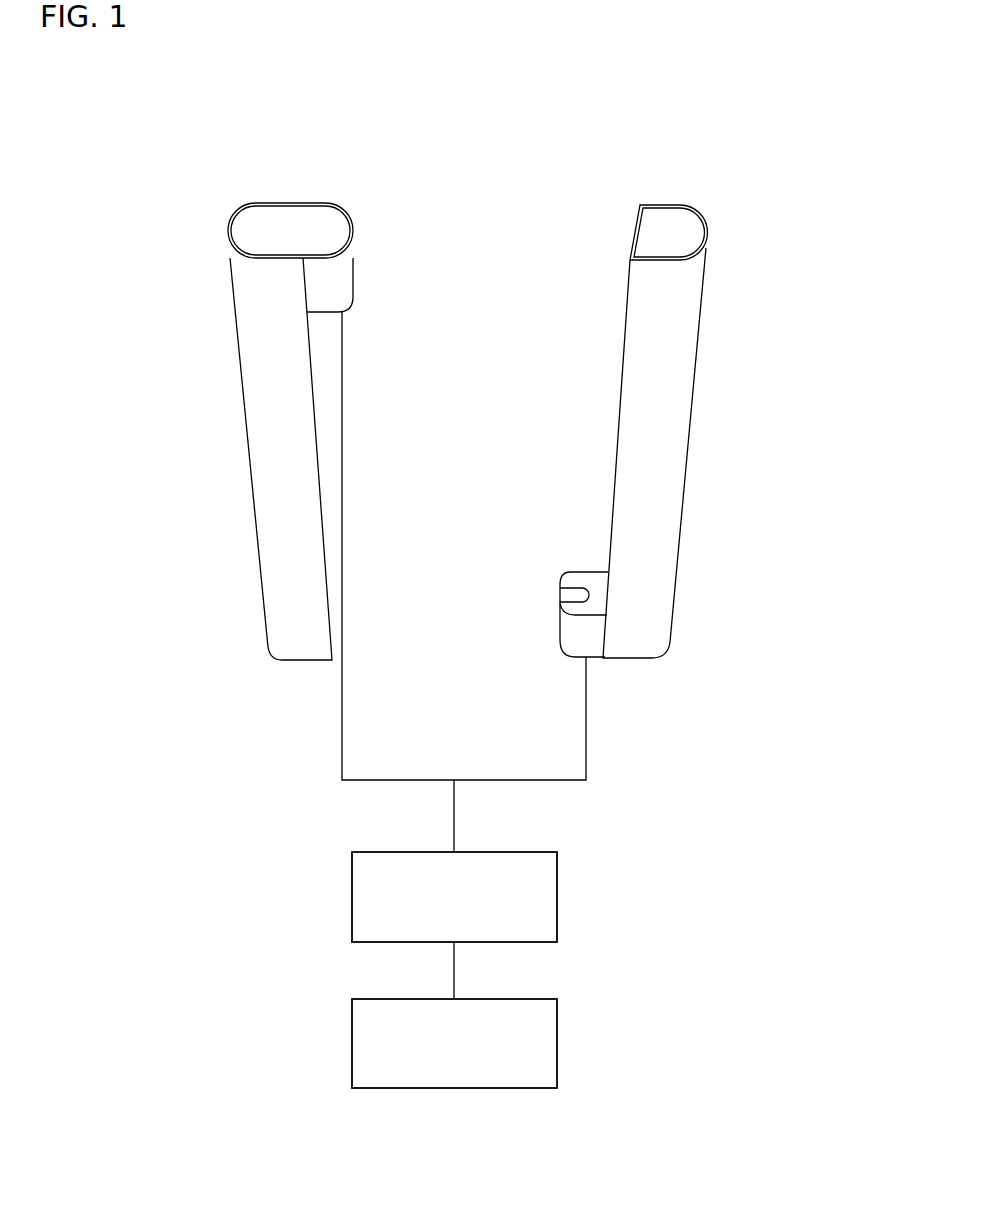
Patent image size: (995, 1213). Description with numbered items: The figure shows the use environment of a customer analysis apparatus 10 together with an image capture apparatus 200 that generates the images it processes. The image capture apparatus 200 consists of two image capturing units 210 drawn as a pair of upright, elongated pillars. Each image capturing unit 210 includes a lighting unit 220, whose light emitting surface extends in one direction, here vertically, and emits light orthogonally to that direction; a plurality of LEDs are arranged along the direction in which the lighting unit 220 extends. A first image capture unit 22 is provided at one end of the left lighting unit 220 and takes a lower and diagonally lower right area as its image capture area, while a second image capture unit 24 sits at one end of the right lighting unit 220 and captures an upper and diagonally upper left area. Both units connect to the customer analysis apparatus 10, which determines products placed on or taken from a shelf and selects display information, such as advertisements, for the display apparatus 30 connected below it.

The image capture apparatus 200 is at (662, 86).
The image capturing unit 210 is at (298, 195).
The lighting unit 220 is at (250, 407).
The first image capture unit 22 is at (345, 275).
The second image capture unit 24 is at (583, 578).
The customer analysis apparatus 10 is at (557, 898).
The display apparatus 30 is at (557, 1045).